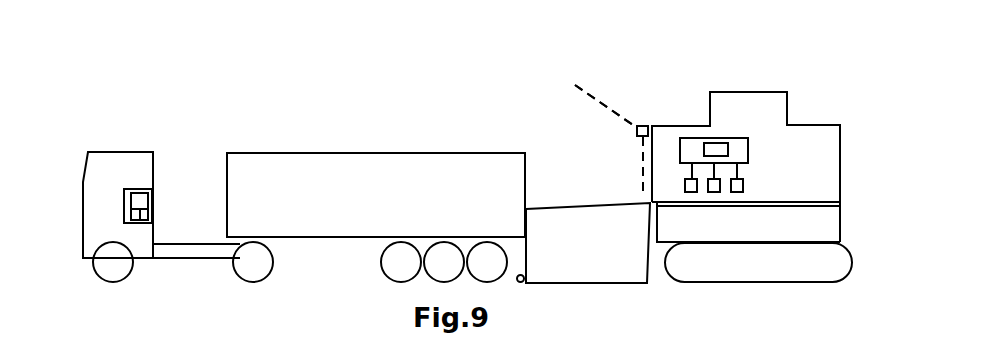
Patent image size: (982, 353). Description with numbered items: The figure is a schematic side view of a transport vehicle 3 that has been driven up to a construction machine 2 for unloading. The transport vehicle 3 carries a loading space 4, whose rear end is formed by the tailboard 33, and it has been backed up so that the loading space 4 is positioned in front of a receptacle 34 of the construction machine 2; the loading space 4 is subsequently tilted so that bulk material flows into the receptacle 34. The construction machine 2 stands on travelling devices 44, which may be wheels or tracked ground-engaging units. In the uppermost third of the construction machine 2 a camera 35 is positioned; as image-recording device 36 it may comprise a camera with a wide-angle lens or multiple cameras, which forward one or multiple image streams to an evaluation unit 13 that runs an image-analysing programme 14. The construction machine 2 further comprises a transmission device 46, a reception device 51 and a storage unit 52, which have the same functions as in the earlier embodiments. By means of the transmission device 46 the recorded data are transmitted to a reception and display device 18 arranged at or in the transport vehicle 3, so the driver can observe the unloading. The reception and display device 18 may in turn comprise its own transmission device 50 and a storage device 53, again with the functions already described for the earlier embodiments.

The construction machine 2 is at (825, 145).
The transport vehicle 3 is at (226, 131).
The loading space 4 is at (367, 189).
The evaluation unit 13 is at (717, 138).
The image-analysing programme 14 is at (717, 150).
The reception and display device 18 is at (122, 197).
The tailboard 33 is at (525, 172).
The receptacle 34 is at (603, 220).
The camera 35 is at (643, 125).
The image-recording device 36 is at (664, 106).
The travelling devices 44 is at (807, 282).
The transmission device 46 is at (690, 192).
The transmission device 50 is at (143, 196).
The reception device 51 is at (714, 192).
The storage unit 52 is at (737, 192).
The storage device 53 is at (123, 213).